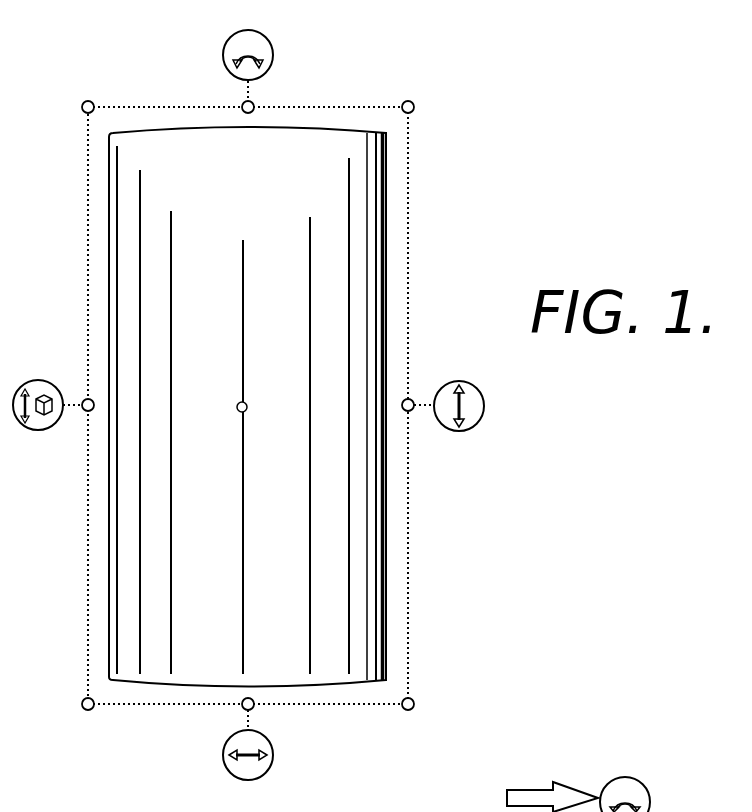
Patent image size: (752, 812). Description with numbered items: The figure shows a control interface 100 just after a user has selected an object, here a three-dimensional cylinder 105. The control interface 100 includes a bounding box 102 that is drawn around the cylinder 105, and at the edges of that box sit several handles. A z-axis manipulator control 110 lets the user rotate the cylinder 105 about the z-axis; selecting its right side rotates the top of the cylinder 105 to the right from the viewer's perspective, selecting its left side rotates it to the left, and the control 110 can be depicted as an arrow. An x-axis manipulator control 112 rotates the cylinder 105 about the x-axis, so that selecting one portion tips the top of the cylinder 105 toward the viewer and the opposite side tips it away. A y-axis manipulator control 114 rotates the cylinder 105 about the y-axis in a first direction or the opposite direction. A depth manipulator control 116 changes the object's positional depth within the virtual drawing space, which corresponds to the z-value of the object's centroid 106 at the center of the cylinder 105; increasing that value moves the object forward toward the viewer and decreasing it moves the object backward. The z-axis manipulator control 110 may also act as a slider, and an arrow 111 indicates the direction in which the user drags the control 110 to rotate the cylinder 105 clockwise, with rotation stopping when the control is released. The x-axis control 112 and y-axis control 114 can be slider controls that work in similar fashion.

The control interface 100 is at (473, 128).
The bounding box 102 is at (410, 232).
The three-dimensional cylinder 105 is at (320, 130).
The centroid 106 is at (247, 402).
The z-axis manipulator control 110 is at (247, 30).
The arrow 111 is at (520, 780).
The x-axis manipulator control 112 is at (484, 406).
The y-axis manipulator control 114 is at (248, 781).
The depth manipulator control 116 is at (38, 380).